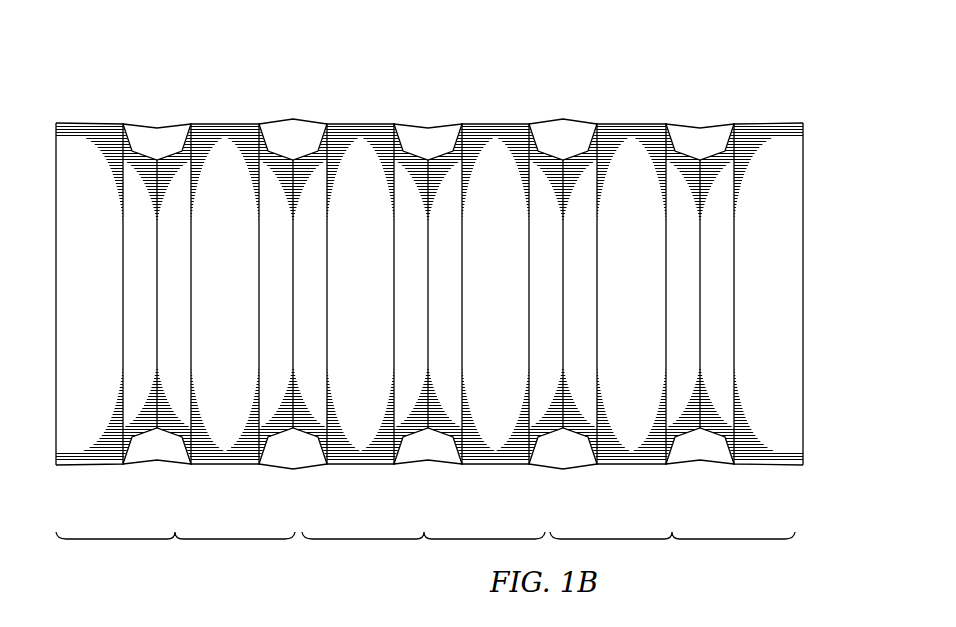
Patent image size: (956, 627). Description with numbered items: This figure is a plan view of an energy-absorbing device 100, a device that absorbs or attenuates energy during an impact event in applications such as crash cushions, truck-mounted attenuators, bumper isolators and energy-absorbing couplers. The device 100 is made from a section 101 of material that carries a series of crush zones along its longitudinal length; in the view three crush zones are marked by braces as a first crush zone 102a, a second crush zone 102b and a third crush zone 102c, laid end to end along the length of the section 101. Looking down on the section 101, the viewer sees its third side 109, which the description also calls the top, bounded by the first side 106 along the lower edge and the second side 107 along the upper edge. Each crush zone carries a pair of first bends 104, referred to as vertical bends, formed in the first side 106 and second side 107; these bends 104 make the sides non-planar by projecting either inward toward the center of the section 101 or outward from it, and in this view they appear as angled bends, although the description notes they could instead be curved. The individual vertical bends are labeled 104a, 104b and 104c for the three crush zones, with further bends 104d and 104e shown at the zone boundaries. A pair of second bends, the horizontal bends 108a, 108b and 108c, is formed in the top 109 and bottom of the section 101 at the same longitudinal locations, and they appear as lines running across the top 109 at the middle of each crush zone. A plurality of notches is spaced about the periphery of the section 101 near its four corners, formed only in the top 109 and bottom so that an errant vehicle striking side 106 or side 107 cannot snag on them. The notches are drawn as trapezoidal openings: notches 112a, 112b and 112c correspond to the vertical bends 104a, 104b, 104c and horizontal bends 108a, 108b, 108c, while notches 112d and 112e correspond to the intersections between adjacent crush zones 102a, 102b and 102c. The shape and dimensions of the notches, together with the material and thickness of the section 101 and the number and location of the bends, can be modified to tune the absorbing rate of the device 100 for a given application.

The energy-absorbing device 100 is at (204, 62).
The section 101 is at (806, 197).
The first crush zone 102a is at (175, 551).
The crush zone 102b is at (423, 551).
The crush zone 102c is at (672, 551).
The first bends 104 is at (748, 506).
The vertical bend 104a is at (157, 463).
The vertical bend 104b is at (428, 462).
The vertical bend 104c is at (700, 462).
The bottom recess 104d is at (293, 470).
The bottom recess 104e is at (563, 470).
The first side 106 is at (84, 467).
The second side 107 is at (85, 123).
The horizontal bend 108a is at (158, 279).
The horizontal bend 108b is at (429, 279).
The horizontal bend 108c is at (701, 279).
The third side 109 is at (108, 307).
The notch 112a is at (150, 128).
The notch 112b is at (438, 138).
The notch 112c is at (710, 138).
The notch 112d is at (285, 128).
The notch 112e is at (573, 138).